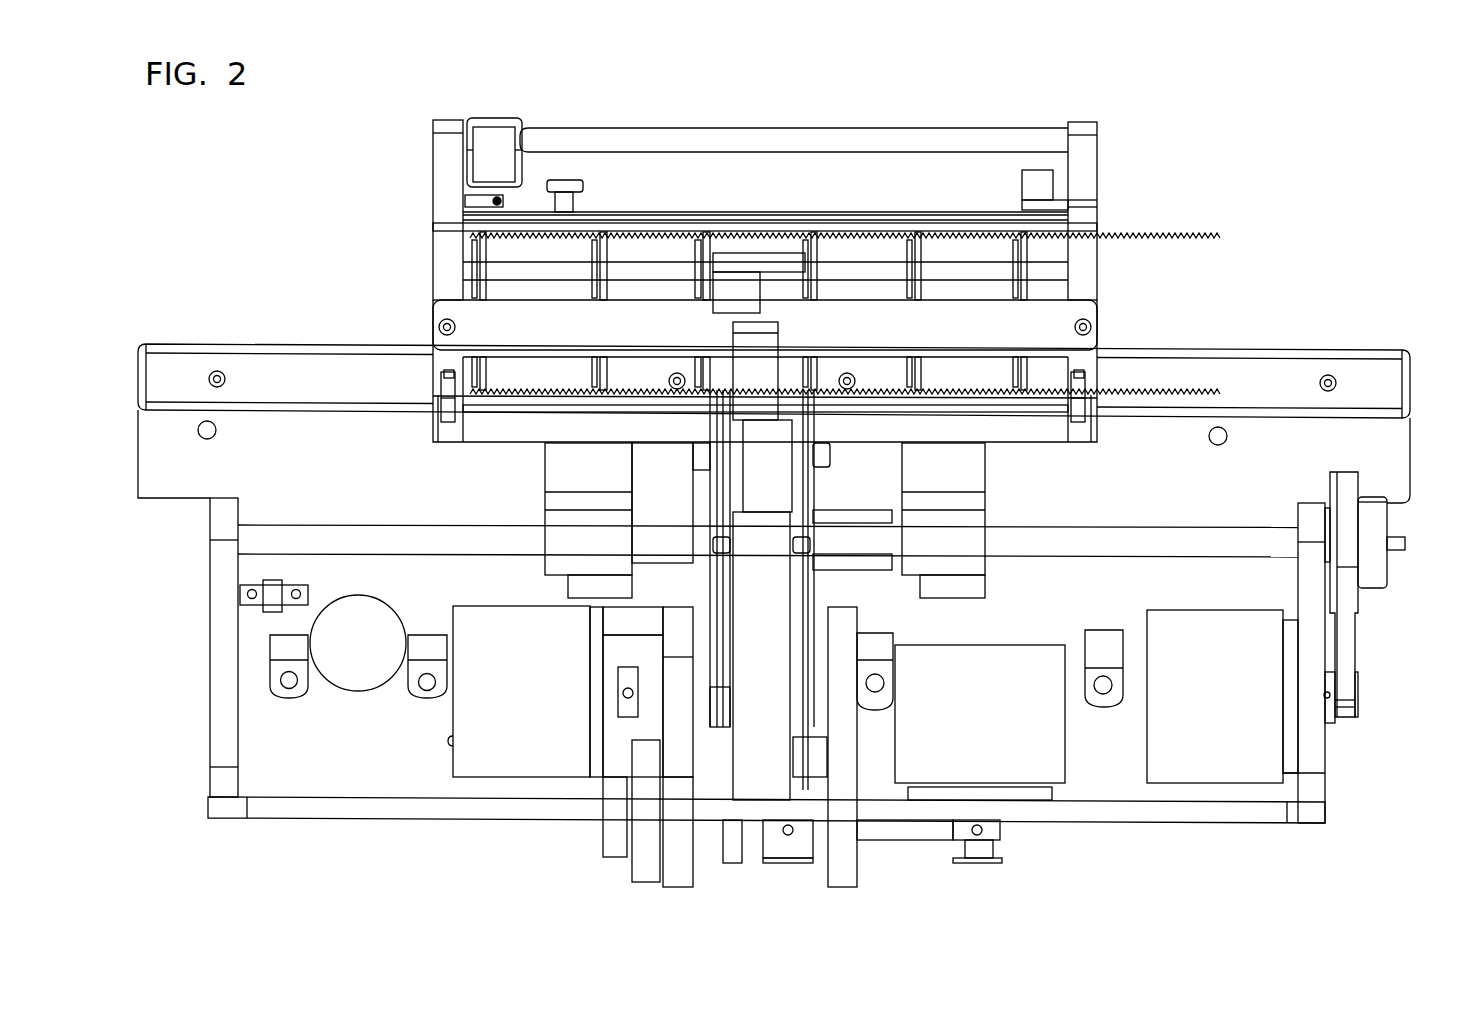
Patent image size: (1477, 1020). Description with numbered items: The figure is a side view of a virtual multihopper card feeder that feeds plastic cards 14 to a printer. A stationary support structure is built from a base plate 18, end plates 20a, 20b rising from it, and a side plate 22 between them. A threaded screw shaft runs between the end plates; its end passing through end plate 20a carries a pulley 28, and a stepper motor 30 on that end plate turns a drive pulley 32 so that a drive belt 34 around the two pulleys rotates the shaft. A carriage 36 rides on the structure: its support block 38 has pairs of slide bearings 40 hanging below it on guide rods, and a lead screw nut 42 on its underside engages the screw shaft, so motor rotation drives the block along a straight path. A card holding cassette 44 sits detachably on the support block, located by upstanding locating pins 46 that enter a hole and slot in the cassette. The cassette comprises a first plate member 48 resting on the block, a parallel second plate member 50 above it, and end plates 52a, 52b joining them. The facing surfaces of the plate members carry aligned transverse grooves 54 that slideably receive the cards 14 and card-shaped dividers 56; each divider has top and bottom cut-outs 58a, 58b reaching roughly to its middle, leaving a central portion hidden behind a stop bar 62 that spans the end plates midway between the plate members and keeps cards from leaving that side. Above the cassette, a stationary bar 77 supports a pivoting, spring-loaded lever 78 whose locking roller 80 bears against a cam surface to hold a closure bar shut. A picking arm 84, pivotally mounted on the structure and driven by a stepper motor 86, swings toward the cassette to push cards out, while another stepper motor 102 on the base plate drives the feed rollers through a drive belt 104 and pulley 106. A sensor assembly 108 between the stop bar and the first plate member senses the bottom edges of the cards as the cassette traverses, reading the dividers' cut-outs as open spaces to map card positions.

The plastic cards 14 is at (921, 272).
The base plate 18 is at (290, 810).
The end plate 20a is at (1313, 757).
The end plate 20b is at (220, 683).
The side plate 22 is at (268, 432).
The pulley 28 is at (1360, 605).
The stepper motor 30 is at (1229, 767).
The drive pulley 32 is at (1357, 720).
The drive belt 34 is at (1345, 638).
The carriage 36 is at (1100, 462).
The support block 38 is at (477, 433).
The slide bearings 40 is at (555, 565).
The lead screw nut 42 is at (848, 516).
The card holding cassette 44 is at (777, 283).
The locating pins 46 is at (440, 425).
The first plate member 48 is at (432, 393).
The second plate member 50 is at (1083, 229).
The end plate 52a is at (1085, 273).
The end plate 52b is at (440, 270).
The grooves 54 is at (558, 234).
The dividers 56 is at (694, 272).
The top cut-out 58a is at (906, 287).
The bottom cut-out 58b is at (908, 368).
The stop bar 62 is at (1088, 315).
The stationary bar 77 is at (756, 134).
The lever 78 is at (505, 118).
The locking roller 80 is at (497, 172).
The picking arm 84 is at (710, 571).
The stepper motor 86 is at (518, 765).
The stepper motor 102 is at (1025, 770).
The drive belt 104 is at (920, 850).
The pulley 106 is at (790, 864).
The sensor assembly 108 is at (759, 394).